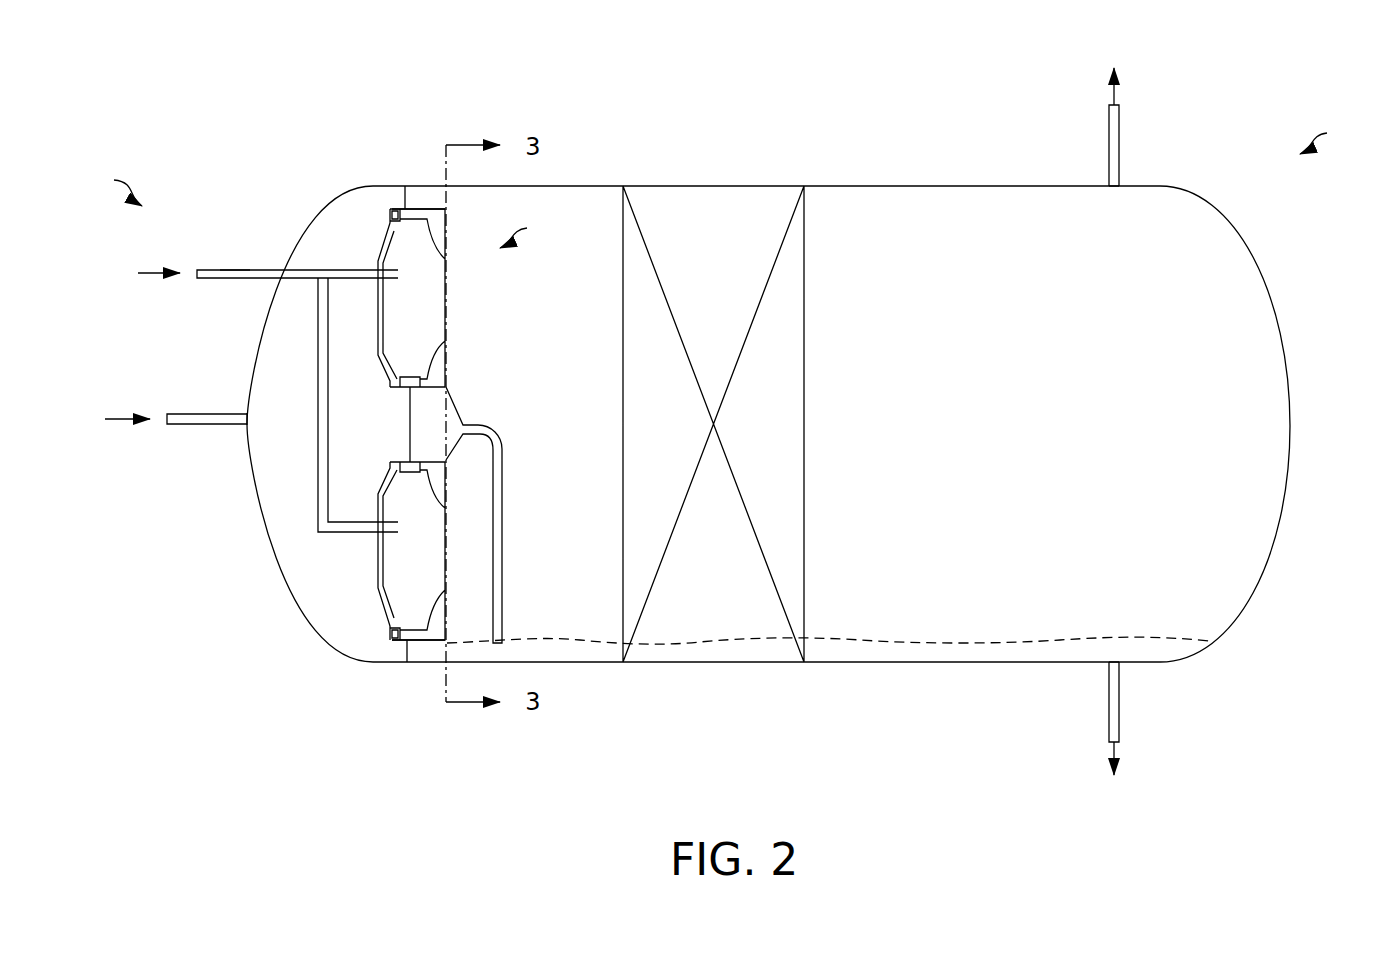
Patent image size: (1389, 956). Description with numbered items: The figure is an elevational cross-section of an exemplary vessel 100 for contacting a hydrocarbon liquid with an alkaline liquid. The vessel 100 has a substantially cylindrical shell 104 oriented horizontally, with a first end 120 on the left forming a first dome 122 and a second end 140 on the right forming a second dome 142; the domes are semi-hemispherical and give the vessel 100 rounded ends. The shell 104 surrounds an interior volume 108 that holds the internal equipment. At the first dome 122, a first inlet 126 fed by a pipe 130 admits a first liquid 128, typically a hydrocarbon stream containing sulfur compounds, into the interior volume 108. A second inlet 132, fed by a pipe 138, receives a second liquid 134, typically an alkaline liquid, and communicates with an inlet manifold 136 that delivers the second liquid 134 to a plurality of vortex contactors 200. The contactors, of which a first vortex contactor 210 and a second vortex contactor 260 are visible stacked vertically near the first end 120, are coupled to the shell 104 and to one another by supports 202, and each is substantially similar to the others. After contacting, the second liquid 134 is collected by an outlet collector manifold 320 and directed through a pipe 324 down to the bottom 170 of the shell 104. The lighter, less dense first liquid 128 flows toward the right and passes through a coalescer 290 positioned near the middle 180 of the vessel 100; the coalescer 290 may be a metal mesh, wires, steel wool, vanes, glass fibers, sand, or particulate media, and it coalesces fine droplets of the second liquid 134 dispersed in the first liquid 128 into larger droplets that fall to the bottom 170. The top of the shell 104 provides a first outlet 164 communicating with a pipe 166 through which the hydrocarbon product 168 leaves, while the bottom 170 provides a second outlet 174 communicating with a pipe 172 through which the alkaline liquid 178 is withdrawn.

The vessel 100 is at (572, 126).
The substantially cylindrical shell 104 is at (855, 185).
The interior volume 108 is at (320, 588).
The first end 120 is at (103, 184).
The first dome 122 is at (282, 597).
The first inlet 126 is at (246, 426).
The first liquid 128 is at (1007, 305).
The pipe 130 is at (211, 412).
The second inlet 132 is at (277, 270).
The second liquid 134 is at (160, 270).
The inlet manifold 136 is at (294, 282).
The pipe 138 is at (234, 268).
The second end 140 is at (1337, 133).
The second dome 142 is at (1256, 582).
The first outlet 164 is at (1120, 186).
The pipe 166 is at (1107, 160).
The hydrocarbon product 168 is at (1116, 84).
The bottom 170 is at (930, 663).
The pipe 172 is at (1107, 688).
The second outlet 174 is at (1120, 664).
The alkaline liquid 178 is at (1116, 762).
The middle 180 is at (720, 663).
The vortex contactor 200 is at (536, 227).
The support 202 is at (420, 195).
The first vortex contactor 210 is at (392, 213).
The second vortex contactor 260 is at (390, 652).
The coalescer 290 is at (806, 420).
The outlet collector manifold 320 is at (458, 412).
The pipe 324 is at (505, 560).